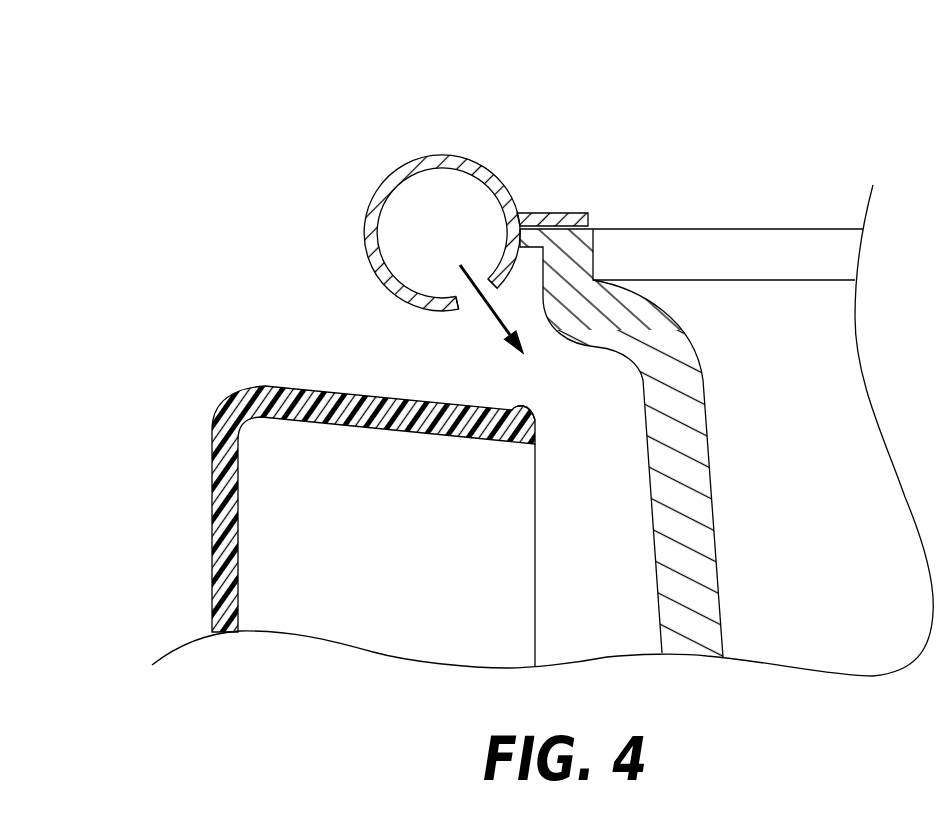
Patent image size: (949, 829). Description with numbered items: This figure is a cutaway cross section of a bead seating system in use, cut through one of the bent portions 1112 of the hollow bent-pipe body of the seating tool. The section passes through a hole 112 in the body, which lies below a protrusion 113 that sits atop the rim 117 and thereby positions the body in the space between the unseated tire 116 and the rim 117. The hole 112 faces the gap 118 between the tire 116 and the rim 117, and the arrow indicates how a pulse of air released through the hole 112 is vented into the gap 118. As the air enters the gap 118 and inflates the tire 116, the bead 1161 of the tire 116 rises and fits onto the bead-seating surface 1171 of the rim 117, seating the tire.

The bent portion 1112 is at (424, 156).
The protrusion 113 is at (560, 213).
The bead-seating surface 1171 is at (572, 262).
The rim 117 is at (779, 337).
The tire 116 is at (346, 503).
The bead 1161 is at (535, 418).
The hole 112 is at (472, 295).
The gap 118 is at (540, 383).